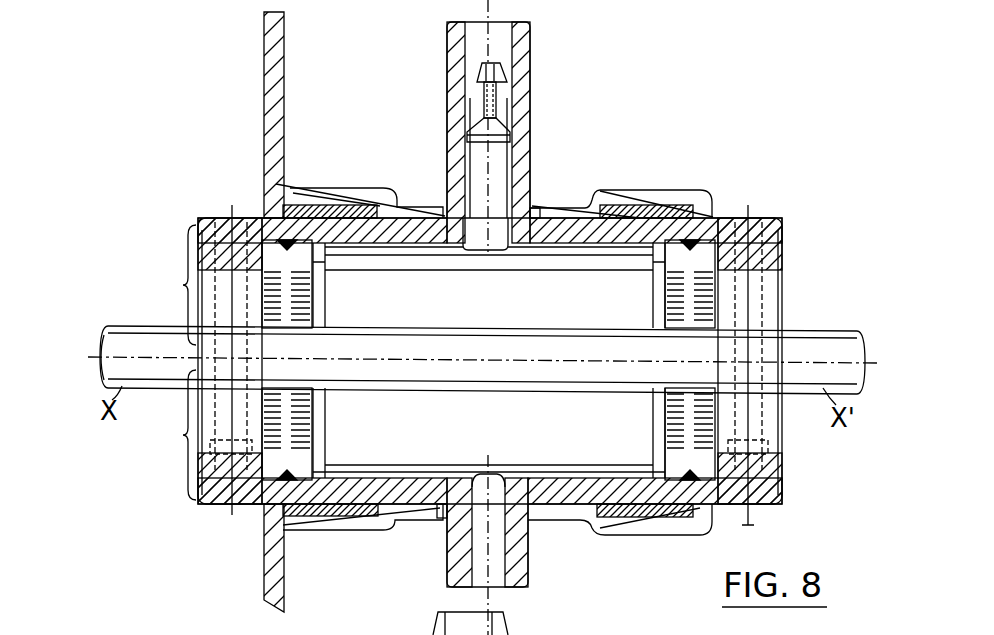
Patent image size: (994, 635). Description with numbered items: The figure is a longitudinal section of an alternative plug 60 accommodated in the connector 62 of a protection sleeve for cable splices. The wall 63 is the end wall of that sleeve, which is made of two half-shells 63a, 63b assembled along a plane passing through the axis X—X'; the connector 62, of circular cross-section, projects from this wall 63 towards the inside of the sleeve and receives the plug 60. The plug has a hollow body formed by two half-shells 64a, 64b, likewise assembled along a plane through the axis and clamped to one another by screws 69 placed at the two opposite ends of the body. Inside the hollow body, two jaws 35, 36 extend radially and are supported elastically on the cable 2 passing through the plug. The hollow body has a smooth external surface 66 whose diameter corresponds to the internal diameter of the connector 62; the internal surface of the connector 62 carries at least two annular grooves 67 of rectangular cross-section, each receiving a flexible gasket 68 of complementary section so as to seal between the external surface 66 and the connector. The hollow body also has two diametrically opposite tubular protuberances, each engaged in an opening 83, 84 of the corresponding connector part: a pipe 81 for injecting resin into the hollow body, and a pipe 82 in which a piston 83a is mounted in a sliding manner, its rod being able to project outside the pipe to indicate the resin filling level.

The cable 2 is at (582, 329).
The jaw 35 is at (318, 300).
The jaw 36 is at (665, 425).
The plug 60 is at (579, 236).
The connector 62 is at (418, 208).
The wall 63 is at (287, 80).
The half-shell 63a is at (285, 156).
The half-shell 63b is at (285, 566).
The half-shell 64a is at (160, 285).
The half-shell 64b is at (162, 435).
The external surface 66 is at (572, 206).
The annular groove 67 is at (355, 205).
The gasket 68 is at (358, 246).
The screw 69 is at (240, 318).
The pipe 81 is at (528, 561).
The pipe 82 is at (528, 106).
The opening 83 is at (512, 139).
The piston 83a is at (502, 63).
The opening 84 is at (534, 208).